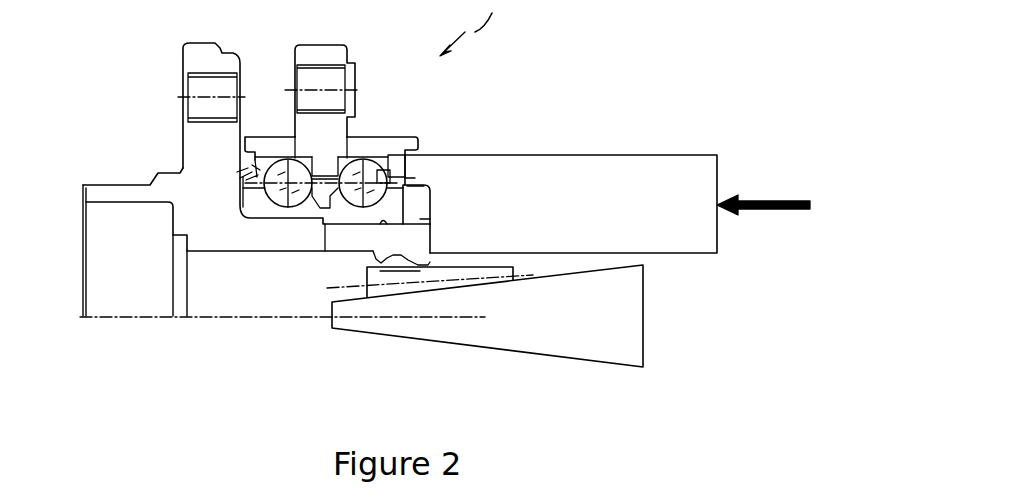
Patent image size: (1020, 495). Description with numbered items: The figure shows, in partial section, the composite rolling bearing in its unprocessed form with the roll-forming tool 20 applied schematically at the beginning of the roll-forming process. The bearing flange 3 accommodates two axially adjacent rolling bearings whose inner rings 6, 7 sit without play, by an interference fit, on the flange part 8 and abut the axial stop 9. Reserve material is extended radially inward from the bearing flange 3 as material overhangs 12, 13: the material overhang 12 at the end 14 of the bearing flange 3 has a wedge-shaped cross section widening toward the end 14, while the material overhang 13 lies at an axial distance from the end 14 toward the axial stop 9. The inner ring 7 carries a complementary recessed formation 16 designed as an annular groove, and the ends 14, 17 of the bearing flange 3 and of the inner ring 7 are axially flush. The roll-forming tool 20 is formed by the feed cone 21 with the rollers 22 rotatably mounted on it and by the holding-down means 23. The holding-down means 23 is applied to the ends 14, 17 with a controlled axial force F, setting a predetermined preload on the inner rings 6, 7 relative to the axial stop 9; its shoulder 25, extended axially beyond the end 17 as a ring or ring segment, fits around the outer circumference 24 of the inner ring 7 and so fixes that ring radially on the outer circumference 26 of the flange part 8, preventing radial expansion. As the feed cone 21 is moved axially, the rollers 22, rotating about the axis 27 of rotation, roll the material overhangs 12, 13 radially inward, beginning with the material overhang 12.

The bearing flange 3 is at (195, 220).
The inner ring 6 is at (268, 212).
The inner ring 7 is at (338, 216).
The flange part 8 is at (289, 238).
The axial stop 9 is at (238, 200).
The material overhang 12 is at (423, 265).
The material overhang 13 is at (372, 269).
The end 14 is at (430, 235).
The recessed formation 16 is at (407, 180).
The end 17 is at (433, 197).
The roll-forming tool 20 is at (707, 100).
The feed cone 21 is at (525, 337).
The rollers 22 is at (440, 280).
The holding-down means 23 is at (597, 168).
The outer circumference 24 is at (415, 186).
The shoulder 25 is at (410, 167).
The outer circumference 26 is at (357, 220).
The axis of rotation 27 is at (342, 289).